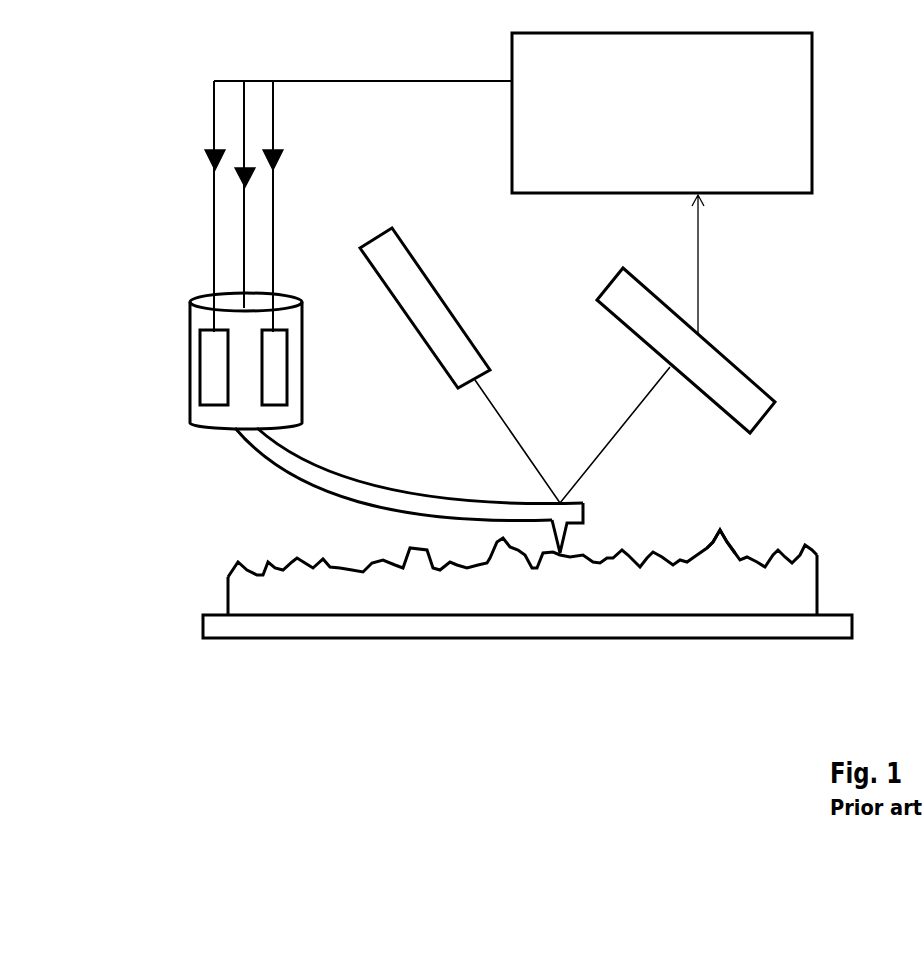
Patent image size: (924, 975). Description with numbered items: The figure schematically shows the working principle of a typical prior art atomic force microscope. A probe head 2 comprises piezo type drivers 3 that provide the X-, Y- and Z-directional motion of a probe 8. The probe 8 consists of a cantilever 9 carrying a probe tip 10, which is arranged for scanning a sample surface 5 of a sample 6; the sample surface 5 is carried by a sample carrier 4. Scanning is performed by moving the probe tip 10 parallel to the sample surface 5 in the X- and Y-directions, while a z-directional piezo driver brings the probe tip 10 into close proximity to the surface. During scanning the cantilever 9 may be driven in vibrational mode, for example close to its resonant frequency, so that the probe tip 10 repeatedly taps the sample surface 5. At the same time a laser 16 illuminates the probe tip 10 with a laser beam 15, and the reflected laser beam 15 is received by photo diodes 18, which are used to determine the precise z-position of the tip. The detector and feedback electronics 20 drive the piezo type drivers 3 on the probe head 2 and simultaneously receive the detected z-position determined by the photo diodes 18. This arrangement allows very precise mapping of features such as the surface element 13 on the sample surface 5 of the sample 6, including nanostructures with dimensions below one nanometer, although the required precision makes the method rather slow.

The probe head 2 is at (190, 330).
The piezo type drivers 3 is at (207, 378).
The sample carrier 4 is at (410, 640).
The sample surface 5 is at (352, 566).
The sample 6 is at (240, 601).
The probe 8 is at (258, 457).
The cantilever 9 is at (378, 488).
The probe tip 10 is at (565, 537).
The surface element 13 is at (722, 538).
The laser beam 15 is at (510, 420).
The laser 16 is at (453, 310).
The photo diodes 18 is at (610, 285).
The detector and feedback electronics 20 is at (812, 110).